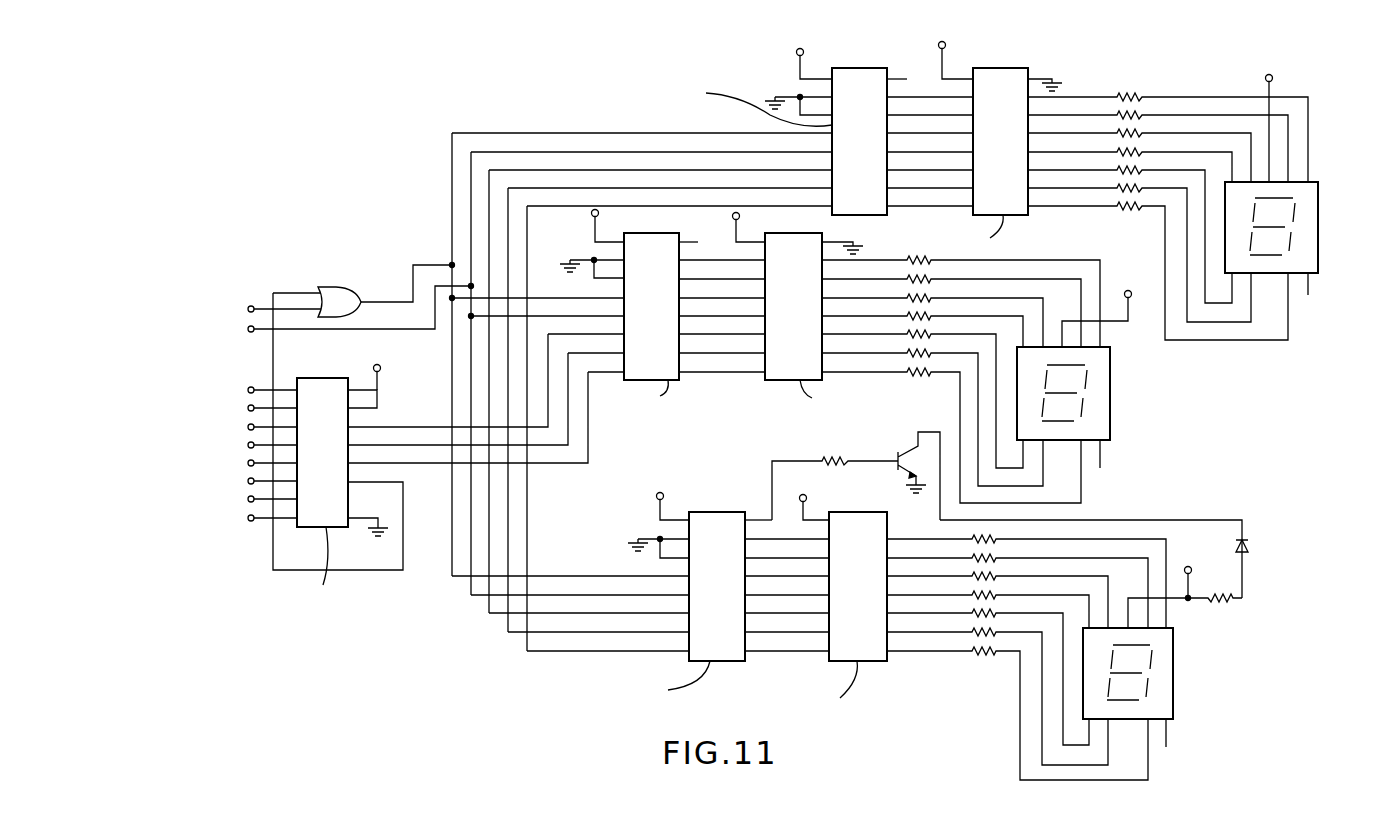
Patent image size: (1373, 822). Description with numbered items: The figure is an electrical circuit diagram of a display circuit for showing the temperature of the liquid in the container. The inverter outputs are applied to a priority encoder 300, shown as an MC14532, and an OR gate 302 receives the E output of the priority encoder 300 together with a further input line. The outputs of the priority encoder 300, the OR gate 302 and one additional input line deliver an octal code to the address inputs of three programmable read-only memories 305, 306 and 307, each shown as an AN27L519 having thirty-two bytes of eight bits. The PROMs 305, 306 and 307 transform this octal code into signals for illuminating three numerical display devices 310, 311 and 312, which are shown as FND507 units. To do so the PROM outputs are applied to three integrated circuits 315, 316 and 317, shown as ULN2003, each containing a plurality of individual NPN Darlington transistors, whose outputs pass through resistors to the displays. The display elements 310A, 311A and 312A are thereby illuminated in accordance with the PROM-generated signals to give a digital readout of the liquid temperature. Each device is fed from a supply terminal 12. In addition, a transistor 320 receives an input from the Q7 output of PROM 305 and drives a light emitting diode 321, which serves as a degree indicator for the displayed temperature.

The supply voltage terminal 12 is at (1191, 566).
The priority encoder 300 is at (338, 361).
The OR gate 302 is at (341, 285).
The programmable read-only memory 305 is at (726, 491).
The programmable read-only memory 306 is at (675, 222).
The programmable read-only memory 307 is at (840, 68).
The numerical display device 310 is at (1200, 211).
The display elements 310A is at (1291, 232).
The numerical display device 311 is at (1001, 379).
The display elements 311A is at (1083, 401).
The numerical display device 312 is at (1066, 657).
The display elements 312A is at (1148, 685).
The integrated circuit 315 is at (856, 494).
The integrated circuit 316 is at (816, 222).
The integrated circuit 317 is at (1015, 68).
The transistor 320 is at (906, 451).
The light emitting diode 321 is at (1249, 541).